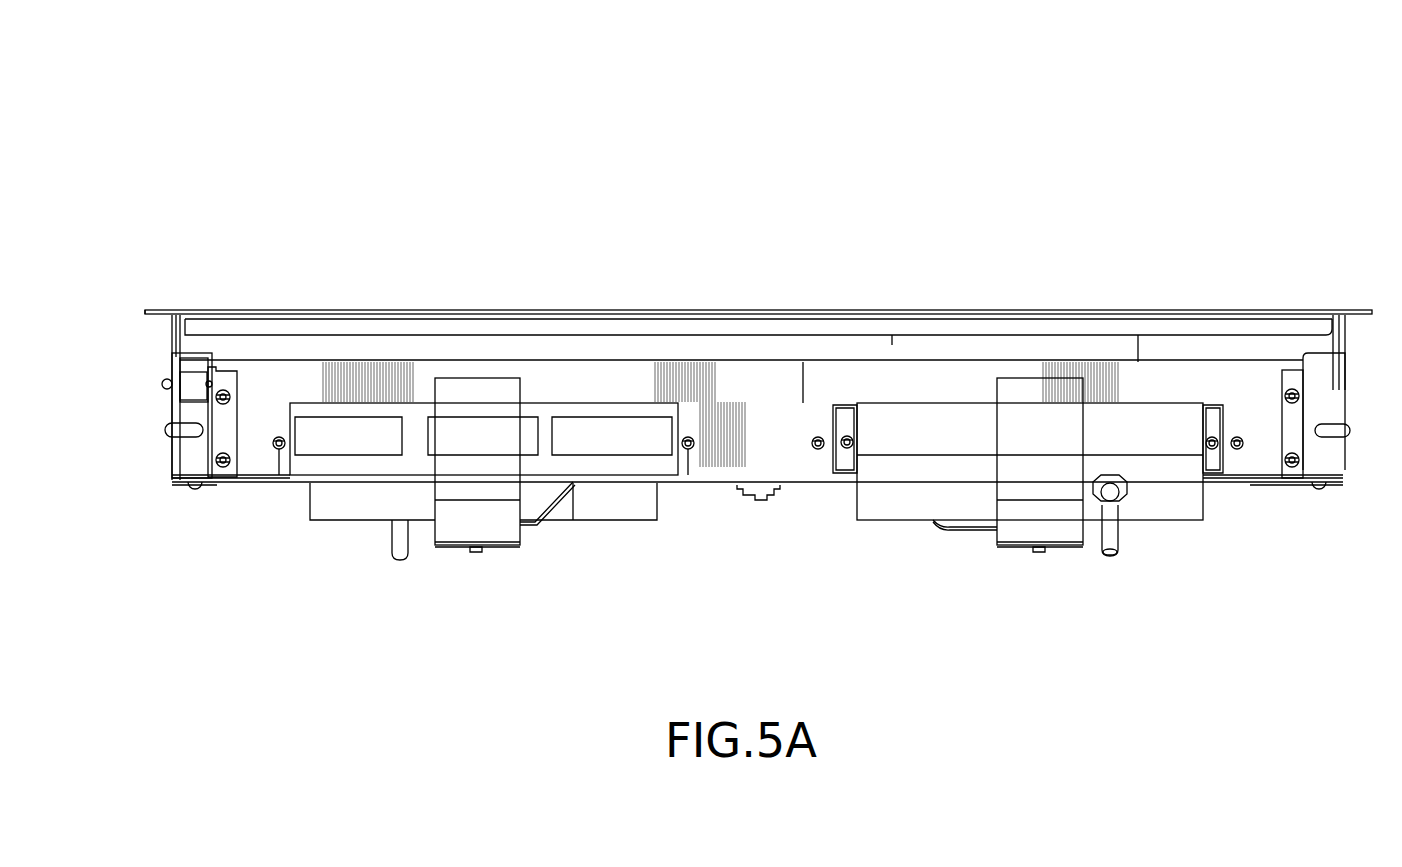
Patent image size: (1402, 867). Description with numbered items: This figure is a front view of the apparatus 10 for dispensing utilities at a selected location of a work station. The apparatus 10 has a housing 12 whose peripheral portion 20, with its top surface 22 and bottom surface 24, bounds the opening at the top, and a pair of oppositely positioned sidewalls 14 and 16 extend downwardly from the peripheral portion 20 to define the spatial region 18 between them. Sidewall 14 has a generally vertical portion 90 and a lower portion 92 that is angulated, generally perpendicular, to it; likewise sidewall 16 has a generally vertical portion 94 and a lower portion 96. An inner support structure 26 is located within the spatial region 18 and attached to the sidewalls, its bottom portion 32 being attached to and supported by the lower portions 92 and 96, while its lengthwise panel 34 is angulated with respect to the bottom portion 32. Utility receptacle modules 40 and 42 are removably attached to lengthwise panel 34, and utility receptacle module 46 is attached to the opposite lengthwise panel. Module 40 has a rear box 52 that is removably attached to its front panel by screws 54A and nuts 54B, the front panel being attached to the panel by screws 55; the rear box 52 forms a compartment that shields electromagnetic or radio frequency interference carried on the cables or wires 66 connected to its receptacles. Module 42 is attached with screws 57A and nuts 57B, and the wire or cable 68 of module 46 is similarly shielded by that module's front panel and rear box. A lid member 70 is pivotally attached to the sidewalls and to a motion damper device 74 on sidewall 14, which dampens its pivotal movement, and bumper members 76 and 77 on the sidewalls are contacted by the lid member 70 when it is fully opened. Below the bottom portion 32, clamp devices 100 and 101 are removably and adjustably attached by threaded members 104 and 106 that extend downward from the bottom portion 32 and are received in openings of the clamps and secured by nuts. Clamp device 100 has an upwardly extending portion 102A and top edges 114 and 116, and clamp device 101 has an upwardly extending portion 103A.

The apparatus 10 is at (331, 202).
The peripheral portion 20 is at (356, 309).
The housing 12 is at (177, 317).
The top surface 22 is at (557, 309).
The bottom surface 24 is at (152, 318).
The sidewall 14 is at (168, 360).
The motion damper device 74 is at (192, 397).
The generally vertical portion 90 is at (177, 447).
The bumper member 76 is at (190, 433).
The lower portion 92 is at (185, 484).
The nuts 57B is at (280, 437).
The screws 57A is at (272, 462).
The bottom portion 32 is at (288, 483).
The utility receptacle module 42 is at (545, 465).
The top edge 114 is at (487, 380).
The clamp device 100 is at (450, 532).
The upwardly extending portion 102A is at (493, 523).
The threaded member 104 is at (477, 550).
The utility receptacle module 46 is at (608, 522).
The wire or cable 68 is at (393, 540).
The lengthwise panel 34 is at (732, 450).
The inner support structure 26 is at (803, 360).
The lid member 70 is at (892, 330).
The spatial region 18 is at (1138, 350).
The sidewall 16 is at (1345, 397).
The screws 55 is at (817, 450).
The nuts 54B is at (847, 437).
The screws 54A is at (847, 450).
The utility receptacle module 40 is at (888, 515).
The rear box 52 is at (920, 495).
The top edge 116 is at (1017, 378).
The upwardly extending portion 103A is at (1020, 500).
The clamp device 101 is at (1063, 530).
The threaded member 106 is at (1040, 552).
The cables or wires 66 is at (1115, 533).
The lower portion 96 is at (1307, 478).
The bumper member 77 is at (1328, 437).
The generally vertical portion 94 is at (1345, 440).